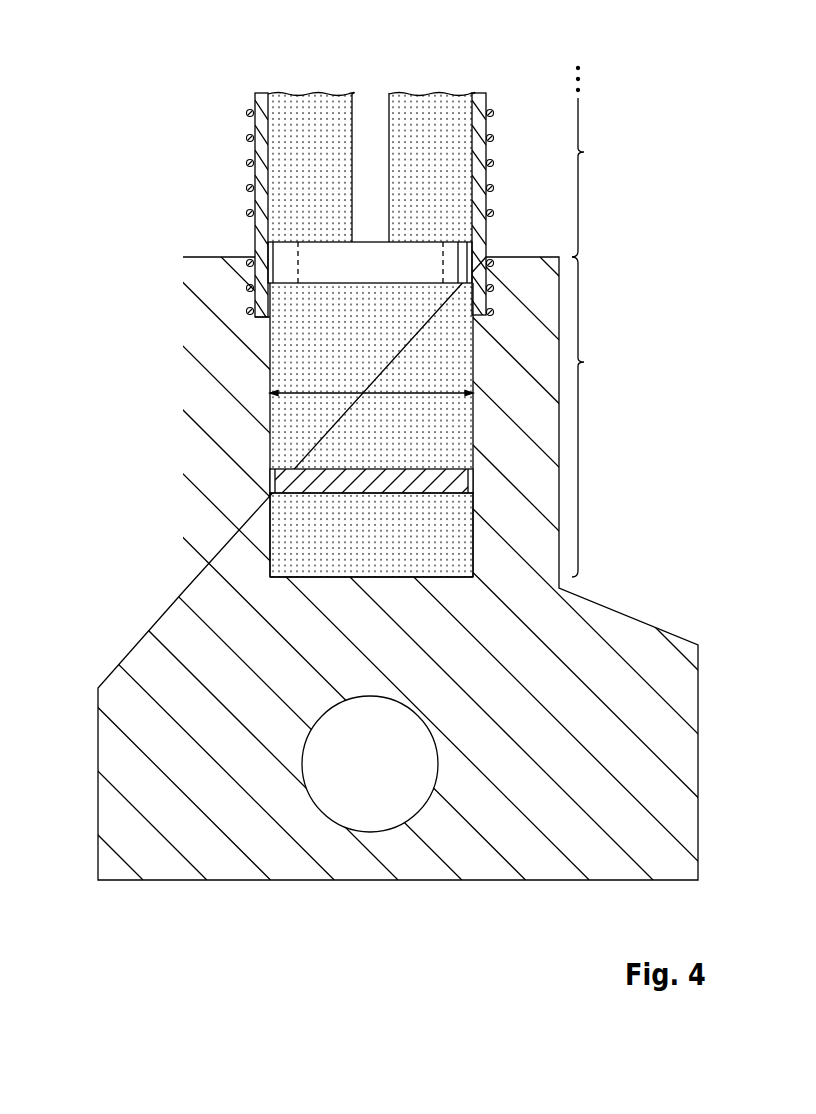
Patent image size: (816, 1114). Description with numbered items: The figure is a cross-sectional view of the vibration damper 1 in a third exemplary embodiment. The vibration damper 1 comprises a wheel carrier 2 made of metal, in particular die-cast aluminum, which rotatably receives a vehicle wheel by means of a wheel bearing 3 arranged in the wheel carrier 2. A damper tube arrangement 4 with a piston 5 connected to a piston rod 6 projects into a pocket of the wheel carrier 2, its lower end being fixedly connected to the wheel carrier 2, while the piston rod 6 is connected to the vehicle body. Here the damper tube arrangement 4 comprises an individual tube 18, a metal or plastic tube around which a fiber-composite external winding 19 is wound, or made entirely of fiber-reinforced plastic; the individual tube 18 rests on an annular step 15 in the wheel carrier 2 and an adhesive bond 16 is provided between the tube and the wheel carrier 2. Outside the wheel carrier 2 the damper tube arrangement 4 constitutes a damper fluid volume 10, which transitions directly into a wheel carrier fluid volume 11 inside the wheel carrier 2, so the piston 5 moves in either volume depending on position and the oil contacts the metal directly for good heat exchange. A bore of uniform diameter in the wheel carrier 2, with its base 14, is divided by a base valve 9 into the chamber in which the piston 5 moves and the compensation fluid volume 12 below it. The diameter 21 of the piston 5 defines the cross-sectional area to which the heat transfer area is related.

The vibration damper 1 is at (320, 299).
The wheel carrier 2 is at (133, 758).
The wheel bearing 3 is at (303, 798).
The damper tube arrangement 4 is at (525, 84).
The piston 5 is at (308, 262).
The piston rod 6 is at (376, 100).
The base valve 9 is at (293, 480).
The damper fluid volume 10 is at (595, 162).
The wheel carrier fluid volume 11 is at (595, 417).
The compensation fluid volume 12 is at (292, 560).
The base 14 is at (376, 578).
The step 15 is at (262, 318).
The adhesive bond 16 is at (252, 300).
The individual tube 18 is at (252, 119).
The external winding 19 is at (252, 187).
The diameter 21 is at (357, 395).